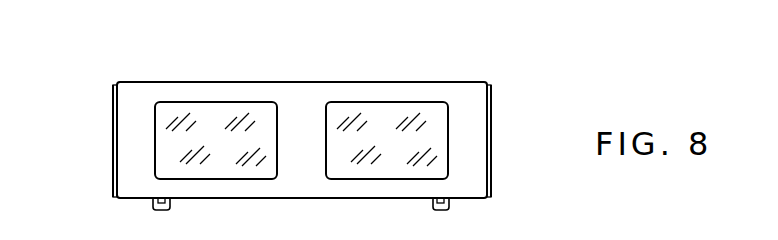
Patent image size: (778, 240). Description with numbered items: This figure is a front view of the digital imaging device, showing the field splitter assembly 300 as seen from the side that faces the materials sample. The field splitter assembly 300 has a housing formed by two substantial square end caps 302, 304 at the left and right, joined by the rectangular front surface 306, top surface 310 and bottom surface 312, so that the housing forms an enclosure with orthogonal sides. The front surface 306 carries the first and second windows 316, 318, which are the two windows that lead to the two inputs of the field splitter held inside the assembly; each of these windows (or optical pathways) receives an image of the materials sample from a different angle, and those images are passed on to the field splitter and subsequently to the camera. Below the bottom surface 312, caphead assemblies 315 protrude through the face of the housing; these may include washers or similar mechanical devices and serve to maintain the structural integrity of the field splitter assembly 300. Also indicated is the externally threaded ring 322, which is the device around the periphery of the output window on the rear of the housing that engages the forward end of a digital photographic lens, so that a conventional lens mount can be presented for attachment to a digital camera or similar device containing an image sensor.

The field splitter assembly 300 is at (502, 65).
The end cap 302 is at (113, 108).
The end cap 304 is at (491, 128).
The front surface 306 is at (325, 148).
The top surface 310 is at (195, 82).
The bottom surface 312 is at (135, 198).
The caphead assemblies 315 is at (170, 205).
The first window 316 is at (228, 102).
The second window 318 is at (408, 102).
The externally threaded ring 322 is at (265, 237).
The element windows is at (410, 48).